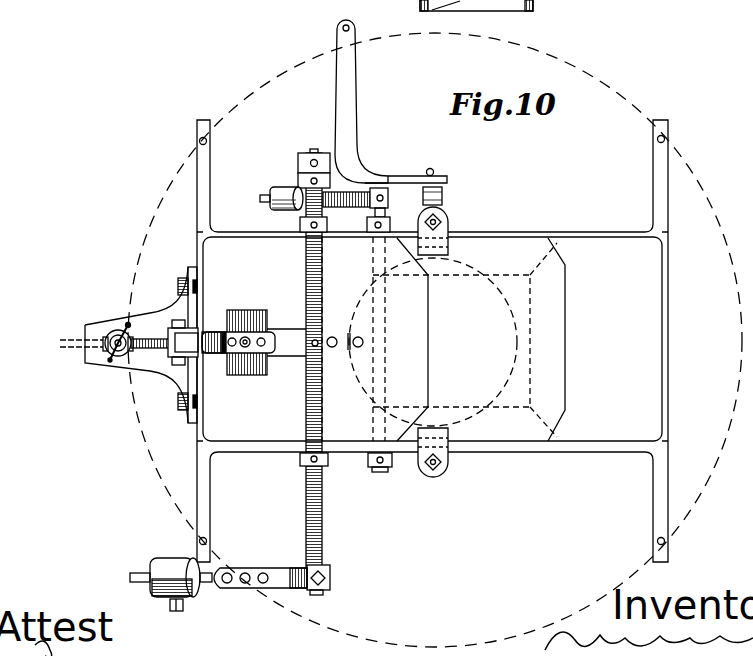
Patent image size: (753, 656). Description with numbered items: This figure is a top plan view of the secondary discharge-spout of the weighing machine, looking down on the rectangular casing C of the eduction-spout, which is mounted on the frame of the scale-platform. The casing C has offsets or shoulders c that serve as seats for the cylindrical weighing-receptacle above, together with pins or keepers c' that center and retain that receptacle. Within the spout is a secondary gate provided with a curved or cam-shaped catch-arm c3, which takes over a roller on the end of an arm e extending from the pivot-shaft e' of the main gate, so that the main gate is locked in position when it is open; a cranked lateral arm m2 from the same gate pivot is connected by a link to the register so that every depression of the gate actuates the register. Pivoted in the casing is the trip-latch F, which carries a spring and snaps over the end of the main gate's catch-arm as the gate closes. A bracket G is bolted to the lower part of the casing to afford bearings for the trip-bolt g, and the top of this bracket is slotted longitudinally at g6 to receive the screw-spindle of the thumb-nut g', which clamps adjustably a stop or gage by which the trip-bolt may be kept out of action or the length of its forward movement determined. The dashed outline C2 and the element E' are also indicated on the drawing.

The offsets or shoulders c is at (432, 341).
The pins or keepers c' is at (447, 337).
The catch-arm c3 is at (344, 193).
The casing C is at (432, 342).
The cross-head plate C2 is at (465, 339).
The cam disk E' is at (457, 339).
The arm e is at (406, 180).
The pivot-shaft e' is at (346, 372).
The cranked lateral arm m2 is at (357, 88).
The trip-latch F is at (214, 358).
The bracket G is at (172, 341).
The trip-bolt g is at (115, 355).
The thumb-nut g' is at (114, 330).
The longitudinal slot g6 is at (141, 345).